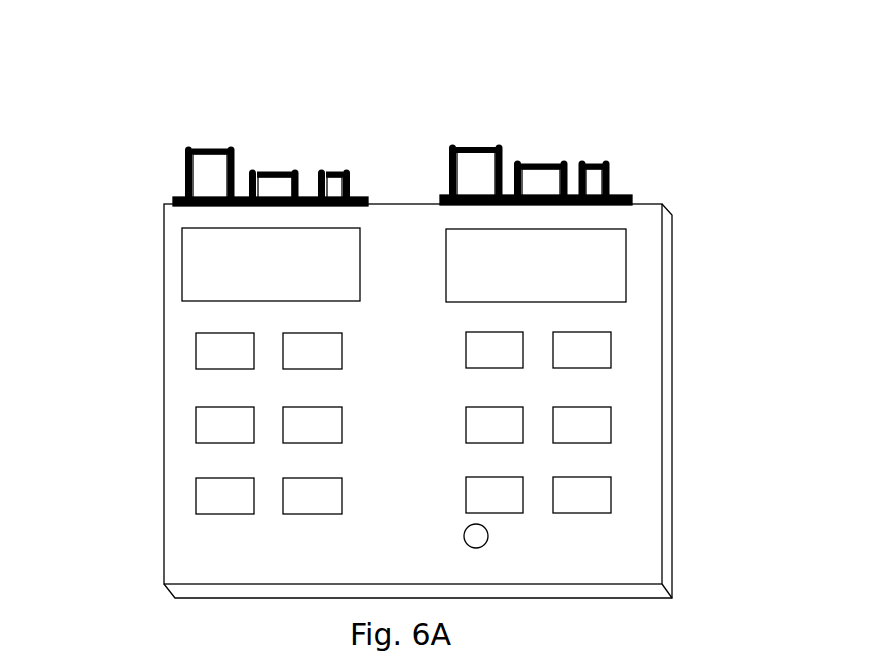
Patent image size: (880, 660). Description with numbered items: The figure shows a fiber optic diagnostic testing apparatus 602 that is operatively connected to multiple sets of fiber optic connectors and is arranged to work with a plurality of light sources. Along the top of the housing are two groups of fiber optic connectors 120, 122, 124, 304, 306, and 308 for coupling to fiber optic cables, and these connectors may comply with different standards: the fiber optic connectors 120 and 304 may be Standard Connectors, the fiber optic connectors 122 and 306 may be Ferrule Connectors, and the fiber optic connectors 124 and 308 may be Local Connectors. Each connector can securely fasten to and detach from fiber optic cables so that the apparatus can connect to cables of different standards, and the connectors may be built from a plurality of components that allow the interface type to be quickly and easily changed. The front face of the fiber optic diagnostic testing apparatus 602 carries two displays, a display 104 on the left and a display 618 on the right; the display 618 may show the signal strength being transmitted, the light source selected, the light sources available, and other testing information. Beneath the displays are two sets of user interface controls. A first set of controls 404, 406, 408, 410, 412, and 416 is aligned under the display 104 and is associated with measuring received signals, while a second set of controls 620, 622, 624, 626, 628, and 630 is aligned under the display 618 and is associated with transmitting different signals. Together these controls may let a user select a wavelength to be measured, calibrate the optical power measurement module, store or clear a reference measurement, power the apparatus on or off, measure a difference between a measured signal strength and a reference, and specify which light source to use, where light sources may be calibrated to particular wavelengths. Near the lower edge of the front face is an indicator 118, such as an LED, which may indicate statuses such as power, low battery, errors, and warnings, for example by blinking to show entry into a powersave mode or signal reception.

The fiber optic diagnostic testing apparatus 602 is at (165, 452).
The display 104 is at (182, 268).
The display 618 is at (626, 266).
The fiber optic connector 120 is at (189, 150).
The fiber optic connector 122 is at (275, 172).
The fiber optic connector 124 is at (332, 172).
The fiber optic connector 304 is at (472, 148).
The fiber optic connector 306 is at (537, 165).
The fiber optic connector 308 is at (587, 165).
The user interface control 404 is at (225, 351).
The user interface control 406 is at (312, 351).
The user interface control 408 is at (225, 425).
The user interface control 410 is at (312, 425).
The user interface control 412 is at (225, 496).
The user interface control 416 is at (312, 496).
The user interface control 620 is at (494, 350).
The user interface control 622 is at (582, 350).
The user interface control 624 is at (494, 425).
The user interface control 626 is at (582, 425).
The user interface control 628 is at (494, 495).
The user interface control 630 is at (582, 495).
The indicator 118 is at (488, 531).